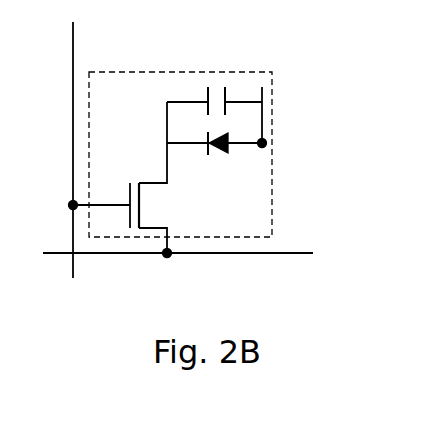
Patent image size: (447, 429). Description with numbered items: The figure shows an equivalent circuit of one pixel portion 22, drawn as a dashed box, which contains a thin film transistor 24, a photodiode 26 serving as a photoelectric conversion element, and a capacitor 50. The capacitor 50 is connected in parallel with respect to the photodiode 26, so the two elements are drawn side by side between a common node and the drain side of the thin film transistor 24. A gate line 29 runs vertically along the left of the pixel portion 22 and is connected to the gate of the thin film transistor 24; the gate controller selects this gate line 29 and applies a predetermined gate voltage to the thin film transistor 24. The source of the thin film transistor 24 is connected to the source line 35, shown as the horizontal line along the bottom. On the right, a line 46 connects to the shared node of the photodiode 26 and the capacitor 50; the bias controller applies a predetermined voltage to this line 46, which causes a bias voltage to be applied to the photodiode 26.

The pixel portion 22 is at (263, 72).
The thin film transistor 24 is at (170, 206).
The photodiode 26 is at (218, 156).
The gate line 29 is at (73, 42).
The source line 35 is at (290, 250).
The line 46 is at (266, 143).
The capacitor 50 is at (217, 82).